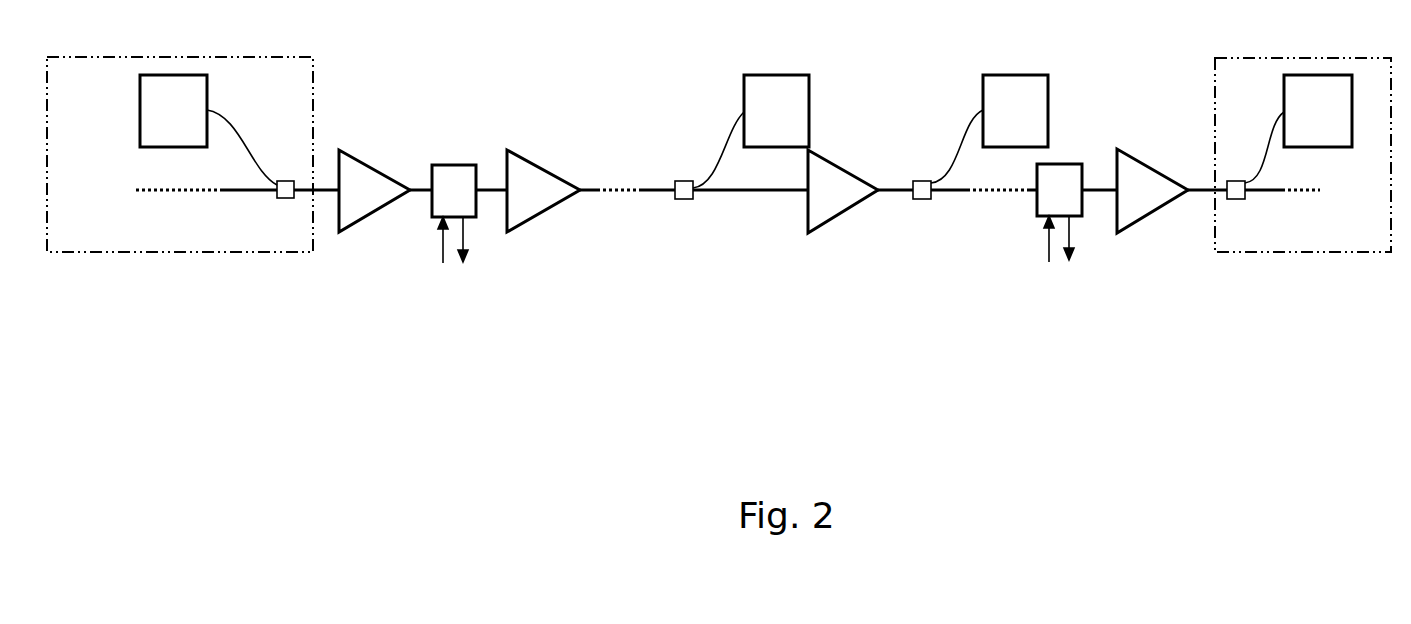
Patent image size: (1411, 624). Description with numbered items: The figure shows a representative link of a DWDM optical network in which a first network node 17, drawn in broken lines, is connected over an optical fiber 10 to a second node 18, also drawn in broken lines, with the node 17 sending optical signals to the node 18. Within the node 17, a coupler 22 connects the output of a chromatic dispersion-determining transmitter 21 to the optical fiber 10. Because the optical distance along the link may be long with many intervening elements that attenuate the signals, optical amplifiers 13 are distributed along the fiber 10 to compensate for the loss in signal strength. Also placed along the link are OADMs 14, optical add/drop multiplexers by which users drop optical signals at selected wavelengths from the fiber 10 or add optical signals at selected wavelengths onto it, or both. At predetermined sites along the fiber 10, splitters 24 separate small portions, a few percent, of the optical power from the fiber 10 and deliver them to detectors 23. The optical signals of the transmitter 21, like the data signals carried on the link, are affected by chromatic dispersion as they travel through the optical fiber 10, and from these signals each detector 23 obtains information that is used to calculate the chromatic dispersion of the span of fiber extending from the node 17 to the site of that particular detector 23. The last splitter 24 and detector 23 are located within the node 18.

The optical fiber 10 is at (594, 188).
The optical amplifier 13 is at (503, 162).
The OADM (Optical Add/Drop Multiplexer) 14 is at (432, 210).
The node 17 is at (148, 253).
The second node 18 is at (1318, 253).
The chromatic dispersion-determining transmitter 21 is at (140, 122).
The coupler 22 is at (285, 181).
The detector 23 is at (744, 92).
The splitter 24 is at (682, 181).